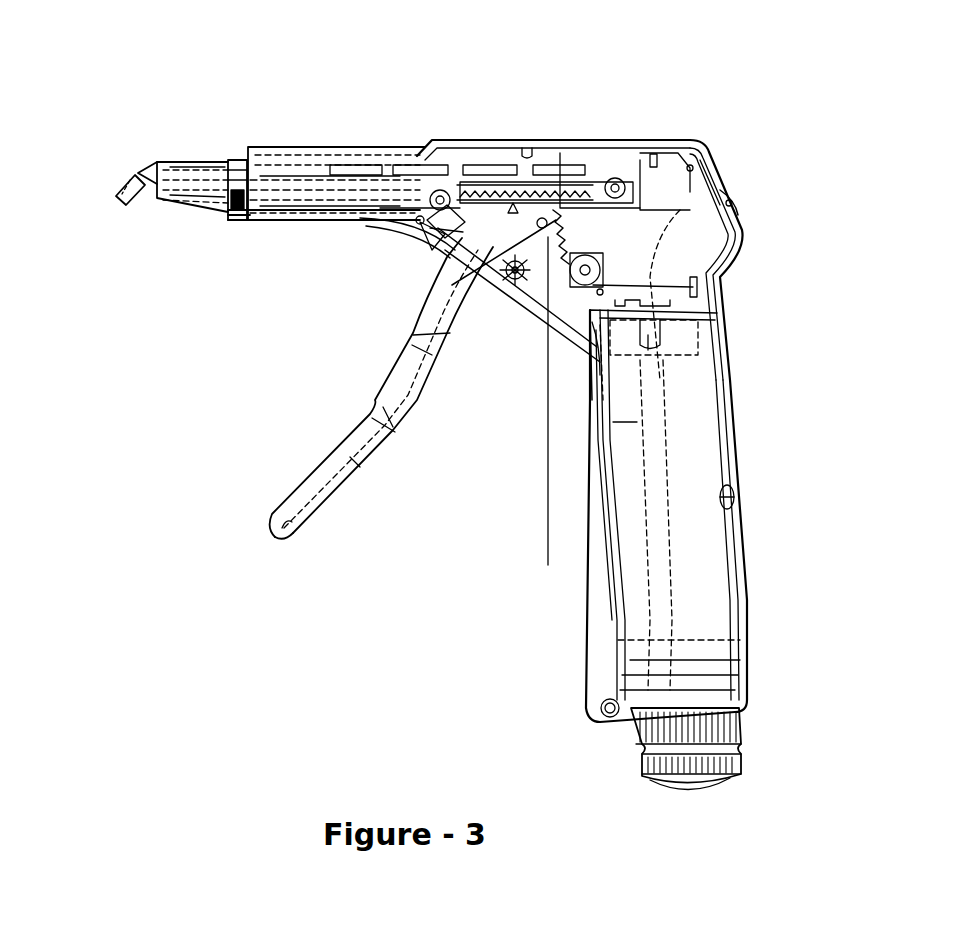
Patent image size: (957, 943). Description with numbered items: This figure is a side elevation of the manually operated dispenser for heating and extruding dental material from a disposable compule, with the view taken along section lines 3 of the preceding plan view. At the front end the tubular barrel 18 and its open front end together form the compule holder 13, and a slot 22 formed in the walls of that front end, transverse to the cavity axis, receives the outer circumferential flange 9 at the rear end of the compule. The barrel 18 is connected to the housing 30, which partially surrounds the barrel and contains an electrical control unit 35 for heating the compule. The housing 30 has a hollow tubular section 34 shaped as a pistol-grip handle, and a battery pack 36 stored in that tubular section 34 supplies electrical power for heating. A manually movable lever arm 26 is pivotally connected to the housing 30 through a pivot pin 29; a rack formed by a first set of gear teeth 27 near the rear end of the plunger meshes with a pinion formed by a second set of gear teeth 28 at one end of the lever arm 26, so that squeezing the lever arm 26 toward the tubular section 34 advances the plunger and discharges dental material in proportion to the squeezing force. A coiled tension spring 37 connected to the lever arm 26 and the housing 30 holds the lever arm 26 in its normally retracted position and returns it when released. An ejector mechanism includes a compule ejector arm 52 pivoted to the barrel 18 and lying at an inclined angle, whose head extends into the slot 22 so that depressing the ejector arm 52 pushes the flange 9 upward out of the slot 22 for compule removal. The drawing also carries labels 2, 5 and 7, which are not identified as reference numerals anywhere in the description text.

The nozzle tip 2 is at (135, 160).
The housing 3 is at (315, 152).
The side wall bulge 5 is at (732, 198).
The switch 7 is at (668, 296).
The outer circumferential flange 9 is at (620, 366).
The compule holder 13 is at (178, 196).
The tubular barrel 18 is at (380, 140).
The slot 22 is at (237, 155).
The manually movable lever arm 26 is at (322, 462).
The first set of gear teeth 27 is at (538, 170).
The second set of gear teeth 28 is at (556, 222).
The pivot pin 29 is at (510, 288).
The housing 30 is at (660, 138).
The hollow tubular section 34 is at (752, 547).
The electrical control unit 35 is at (672, 198).
The battery pack 36 is at (626, 747).
The coiled tension spring 37 is at (442, 250).
The compule ejector arm 52 is at (250, 228).